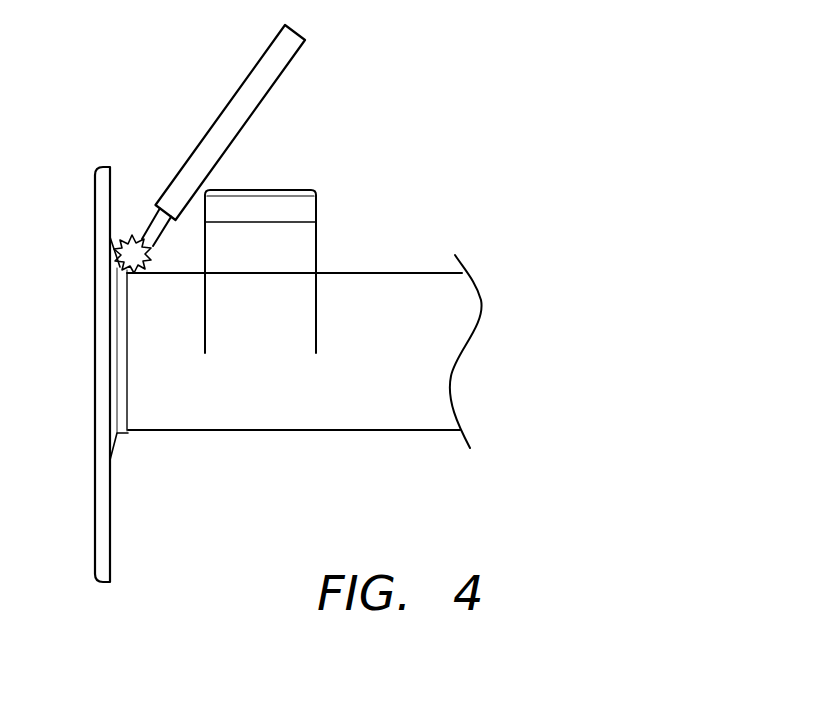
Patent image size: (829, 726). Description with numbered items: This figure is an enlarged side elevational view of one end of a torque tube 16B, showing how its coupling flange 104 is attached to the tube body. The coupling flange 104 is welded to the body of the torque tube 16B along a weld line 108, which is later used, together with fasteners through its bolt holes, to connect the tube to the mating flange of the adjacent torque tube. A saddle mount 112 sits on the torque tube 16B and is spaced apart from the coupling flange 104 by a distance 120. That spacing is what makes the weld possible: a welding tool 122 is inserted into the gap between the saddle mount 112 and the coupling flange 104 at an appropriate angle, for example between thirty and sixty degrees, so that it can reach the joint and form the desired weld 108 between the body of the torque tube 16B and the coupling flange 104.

The coupling flange 104 is at (111, 565).
The torque tube 16B is at (358, 432).
The weld line 108 is at (128, 431).
The saddle mount 112 is at (318, 232).
The distance 120 is at (205, 337).
The welding tool 122 is at (262, 40).